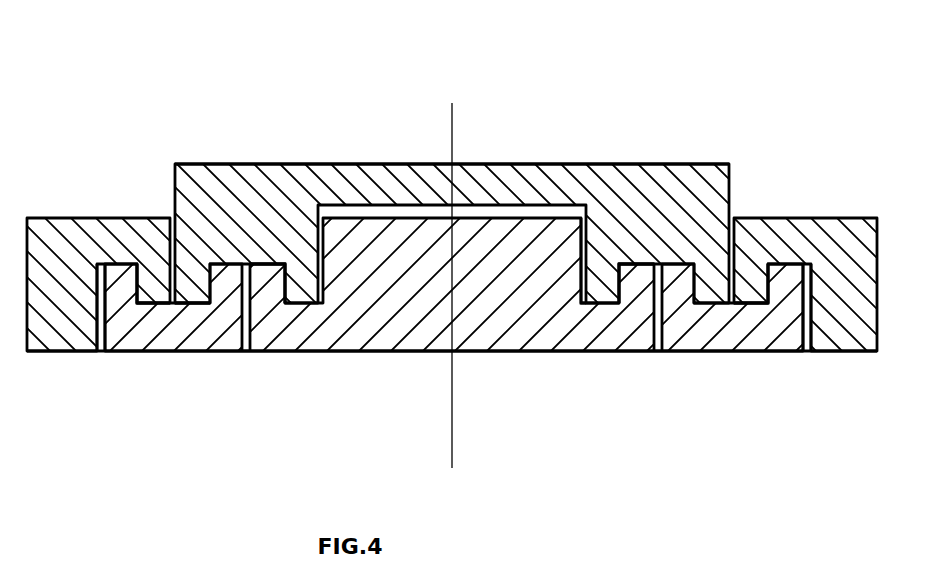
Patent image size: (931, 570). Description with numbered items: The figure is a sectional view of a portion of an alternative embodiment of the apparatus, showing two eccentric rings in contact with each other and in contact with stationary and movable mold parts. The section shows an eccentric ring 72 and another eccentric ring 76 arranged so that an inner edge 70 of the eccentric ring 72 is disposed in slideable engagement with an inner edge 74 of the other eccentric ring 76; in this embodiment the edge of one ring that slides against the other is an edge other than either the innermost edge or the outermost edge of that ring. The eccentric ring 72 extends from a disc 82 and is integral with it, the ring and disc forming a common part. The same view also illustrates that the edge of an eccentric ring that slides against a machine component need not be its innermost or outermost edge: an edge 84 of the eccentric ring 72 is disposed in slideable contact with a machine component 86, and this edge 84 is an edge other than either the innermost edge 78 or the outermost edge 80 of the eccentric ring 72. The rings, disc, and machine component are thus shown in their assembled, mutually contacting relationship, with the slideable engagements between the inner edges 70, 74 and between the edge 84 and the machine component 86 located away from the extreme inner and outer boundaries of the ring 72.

The inner edge 70 is at (210, 290).
The eccentric ring 72 is at (243, 235).
The inner edge 74 is at (208, 300).
The eccentric ring 76 is at (183, 333).
The innermost edge 78 is at (320, 278).
The outermost edge 80 is at (167, 276).
The disc 82 is at (380, 165).
The edge 84 is at (622, 275).
The machine component 86 is at (403, 332).